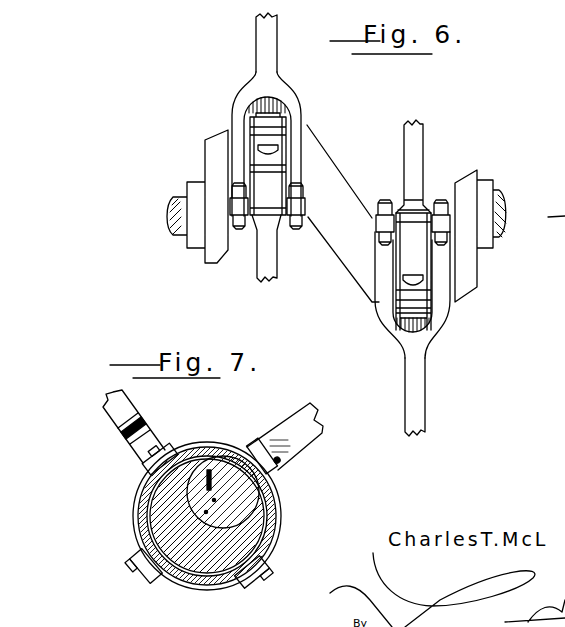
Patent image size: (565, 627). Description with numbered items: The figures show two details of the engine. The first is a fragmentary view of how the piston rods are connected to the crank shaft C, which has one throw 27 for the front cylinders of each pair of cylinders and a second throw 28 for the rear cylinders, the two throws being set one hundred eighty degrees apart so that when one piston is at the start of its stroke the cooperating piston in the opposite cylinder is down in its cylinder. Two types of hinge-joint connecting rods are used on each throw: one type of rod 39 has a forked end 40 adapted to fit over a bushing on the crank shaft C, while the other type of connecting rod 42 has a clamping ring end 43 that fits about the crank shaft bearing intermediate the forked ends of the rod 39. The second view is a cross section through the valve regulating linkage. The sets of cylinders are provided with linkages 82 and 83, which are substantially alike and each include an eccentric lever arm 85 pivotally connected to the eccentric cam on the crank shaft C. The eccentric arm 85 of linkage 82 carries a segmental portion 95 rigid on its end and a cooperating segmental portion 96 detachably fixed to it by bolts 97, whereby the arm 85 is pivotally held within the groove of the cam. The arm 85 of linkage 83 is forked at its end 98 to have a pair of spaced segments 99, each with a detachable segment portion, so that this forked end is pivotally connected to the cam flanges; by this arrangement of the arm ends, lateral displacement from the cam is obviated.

In FIG. 6, the throw 27 is at (232, 150).
In FIG. 6, the second throw 28 is at (373, 283).
In FIG. 6, the connecting rod 39 is at (268, 42).
In FIG. 6, the forked end 40 is at (297, 122).
In FIG. 6, the connecting rod 42 is at (268, 257).
In FIG. 6, the clamping ring end 43 is at (263, 198).
In FIG. 6, the crank shaft C is at (336, 188).
In FIG. 7, the linkage 82 is at (333, 384).
In FIG. 7, the linkage 83 is at (107, 417).
In FIG. 7, the eccentric lever arm 85 is at (125, 403).
In FIG. 7, the segmental portion 95 is at (273, 518).
In FIG. 7, the segmental portion 96 is at (217, 582).
In FIG. 7, the bolts 97 is at (147, 468).
In FIG. 7, the forked end 98 is at (145, 437).
In FIG. 7, the spaced segments 99 is at (210, 442).